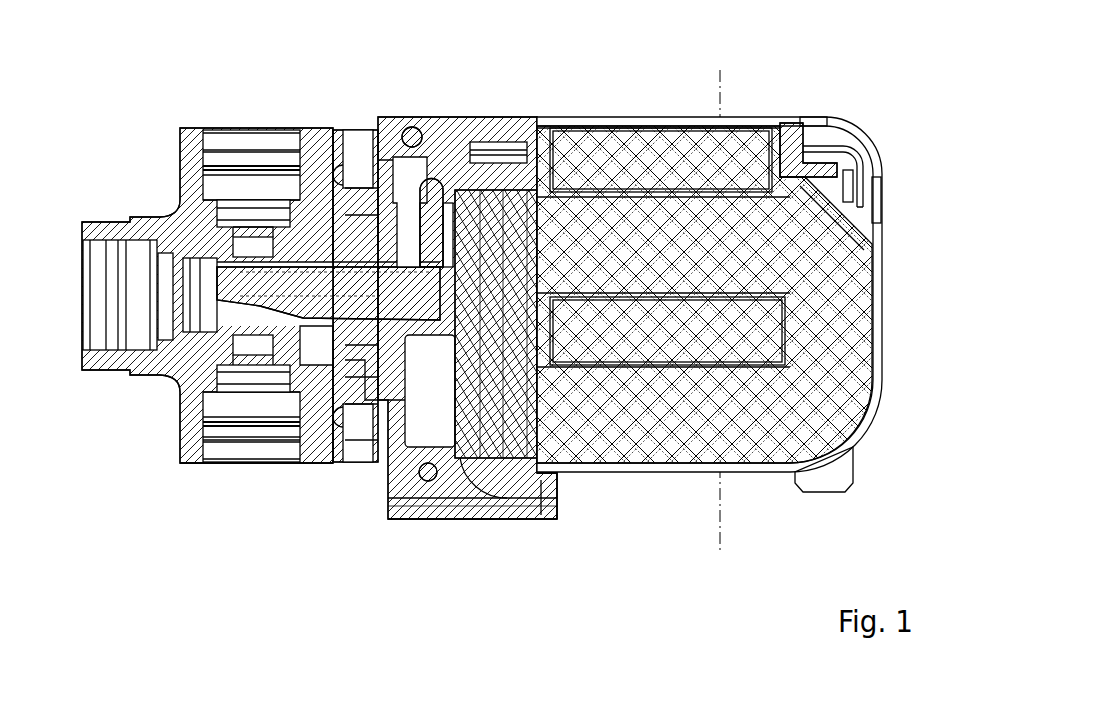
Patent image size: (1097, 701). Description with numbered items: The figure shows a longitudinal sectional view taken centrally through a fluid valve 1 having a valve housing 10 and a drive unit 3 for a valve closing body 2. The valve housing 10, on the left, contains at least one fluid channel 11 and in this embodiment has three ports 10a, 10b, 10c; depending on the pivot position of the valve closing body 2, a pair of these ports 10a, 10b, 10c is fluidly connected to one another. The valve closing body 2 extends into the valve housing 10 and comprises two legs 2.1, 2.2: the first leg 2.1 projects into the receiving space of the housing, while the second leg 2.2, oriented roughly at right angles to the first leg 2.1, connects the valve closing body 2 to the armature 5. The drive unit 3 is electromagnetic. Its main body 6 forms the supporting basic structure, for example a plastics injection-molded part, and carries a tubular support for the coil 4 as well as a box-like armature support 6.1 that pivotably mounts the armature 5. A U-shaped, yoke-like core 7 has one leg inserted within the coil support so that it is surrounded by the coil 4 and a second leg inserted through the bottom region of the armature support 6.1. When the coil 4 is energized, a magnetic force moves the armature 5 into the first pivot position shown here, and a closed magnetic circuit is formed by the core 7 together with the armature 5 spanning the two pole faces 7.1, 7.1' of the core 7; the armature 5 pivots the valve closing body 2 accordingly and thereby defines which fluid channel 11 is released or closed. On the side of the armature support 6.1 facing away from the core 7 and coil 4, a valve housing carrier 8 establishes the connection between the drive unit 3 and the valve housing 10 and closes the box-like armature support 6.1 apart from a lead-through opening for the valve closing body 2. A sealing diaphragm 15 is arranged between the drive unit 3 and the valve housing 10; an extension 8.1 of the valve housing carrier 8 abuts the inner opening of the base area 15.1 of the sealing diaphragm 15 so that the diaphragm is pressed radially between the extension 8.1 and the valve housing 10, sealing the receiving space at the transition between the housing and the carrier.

The fluid valve 1 is at (165, 82).
The valve closing body 2 is at (212, 268).
The first leg 2.1 is at (245, 257).
The second leg 2.2 is at (380, 130).
The drive unit 3 is at (878, 112).
The coil 4 is at (640, 130).
The armature 5 is at (436, 150).
The main body 6 is at (803, 138).
The armature support 6.1 is at (500, 508).
The U-shaped core 7 is at (832, 340).
The pole face 7.1 is at (480, 263).
The pole face 7.1' is at (599, 510).
The valve housing carrier 8 is at (387, 483).
The extension 8.1 is at (358, 380).
The valve housing 10 is at (183, 423).
The port 10a is at (242, 116).
The port 10b is at (208, 478).
The port 10c is at (66, 288).
The fluid channel 11 is at (183, 465).
The sealing diaphragm 15 is at (178, 313).
The base area 15.1 is at (298, 438).